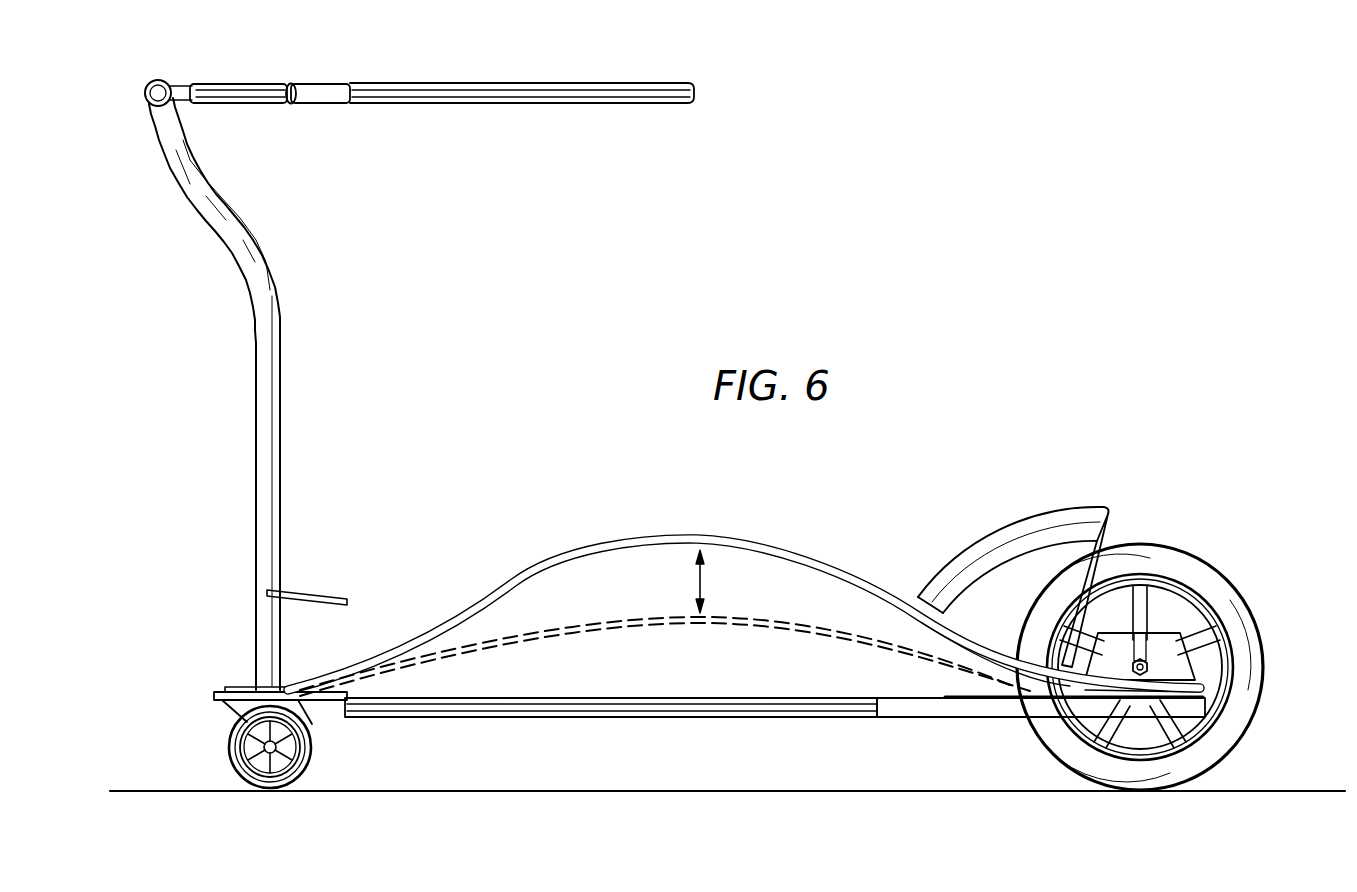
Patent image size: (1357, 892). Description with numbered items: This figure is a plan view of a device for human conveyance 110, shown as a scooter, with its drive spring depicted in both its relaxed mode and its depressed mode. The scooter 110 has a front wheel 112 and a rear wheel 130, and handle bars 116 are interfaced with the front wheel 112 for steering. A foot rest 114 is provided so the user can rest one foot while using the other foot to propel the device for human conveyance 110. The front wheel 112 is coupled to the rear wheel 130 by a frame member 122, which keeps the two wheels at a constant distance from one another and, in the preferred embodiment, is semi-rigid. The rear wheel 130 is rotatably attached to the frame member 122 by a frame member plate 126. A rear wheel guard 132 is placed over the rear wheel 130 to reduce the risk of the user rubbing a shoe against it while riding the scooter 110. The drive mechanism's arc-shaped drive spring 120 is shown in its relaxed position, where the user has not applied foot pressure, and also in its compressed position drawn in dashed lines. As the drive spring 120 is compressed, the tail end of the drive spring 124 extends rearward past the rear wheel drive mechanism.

The device for human conveyance 110 is at (985, 404).
The front wheel 112 is at (306, 778).
The foot rest 114 is at (305, 592).
The handle bars 116 is at (632, 104).
The arc-shaped drive spring 120 is at (748, 541).
The frame member 122 is at (711, 718).
The tail end of the drive spring 124 is at (1240, 689).
The frame member plate 126 is at (1175, 657).
The rear wheel 130 is at (1210, 553).
The rear wheel guard 132 is at (1007, 512).